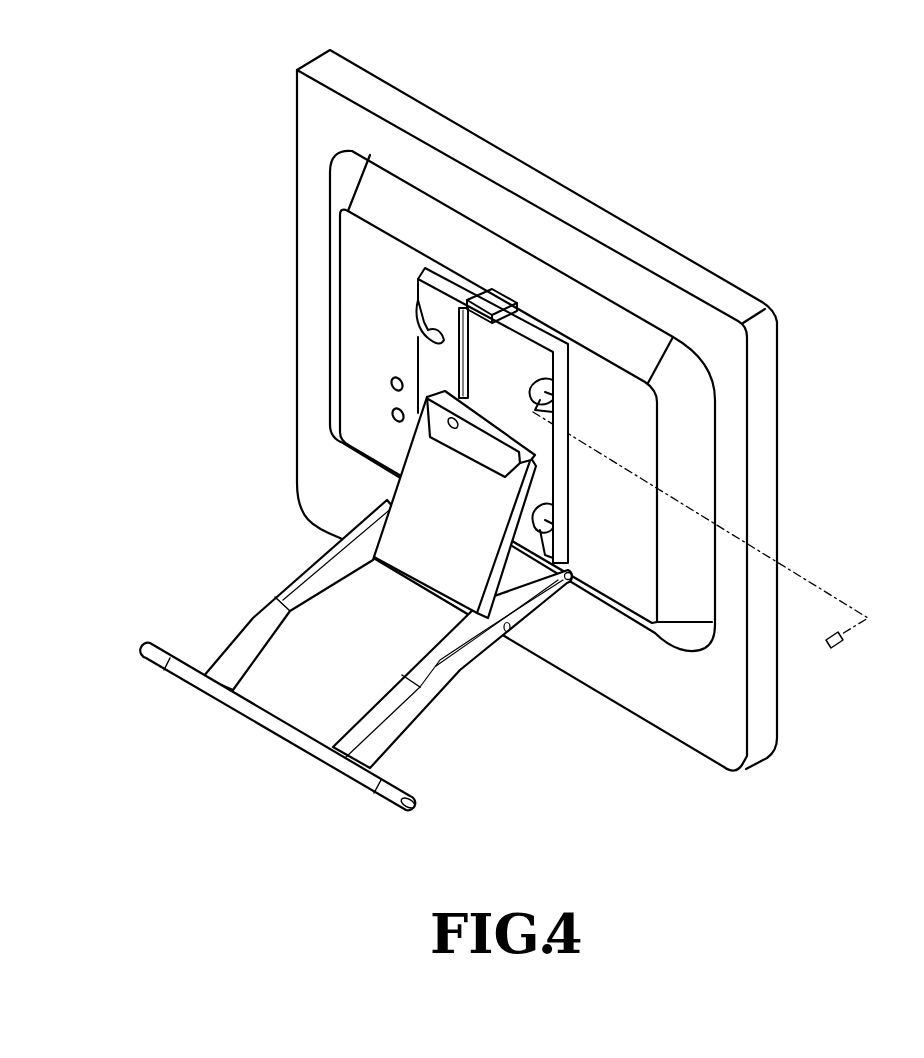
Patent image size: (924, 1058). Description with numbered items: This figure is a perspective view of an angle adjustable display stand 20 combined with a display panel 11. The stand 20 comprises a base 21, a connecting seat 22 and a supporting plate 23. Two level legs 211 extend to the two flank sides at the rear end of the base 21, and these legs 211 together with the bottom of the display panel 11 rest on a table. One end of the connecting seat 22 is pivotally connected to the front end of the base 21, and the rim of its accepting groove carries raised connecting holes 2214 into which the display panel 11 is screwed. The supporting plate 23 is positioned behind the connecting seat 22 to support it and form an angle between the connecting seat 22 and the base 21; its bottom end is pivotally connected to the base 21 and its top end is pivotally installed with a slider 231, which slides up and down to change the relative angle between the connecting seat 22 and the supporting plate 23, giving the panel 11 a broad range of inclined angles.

The display panel 11 is at (758, 500).
The angle adjustable display stand 20 is at (240, 565).
The base 21 is at (390, 712).
The level legs 211 is at (180, 673).
The connecting seat 22 is at (565, 413).
The raised connecting holes 2214 is at (560, 394).
The supporting plate 23 is at (369, 499).
The slider 231 is at (425, 412).